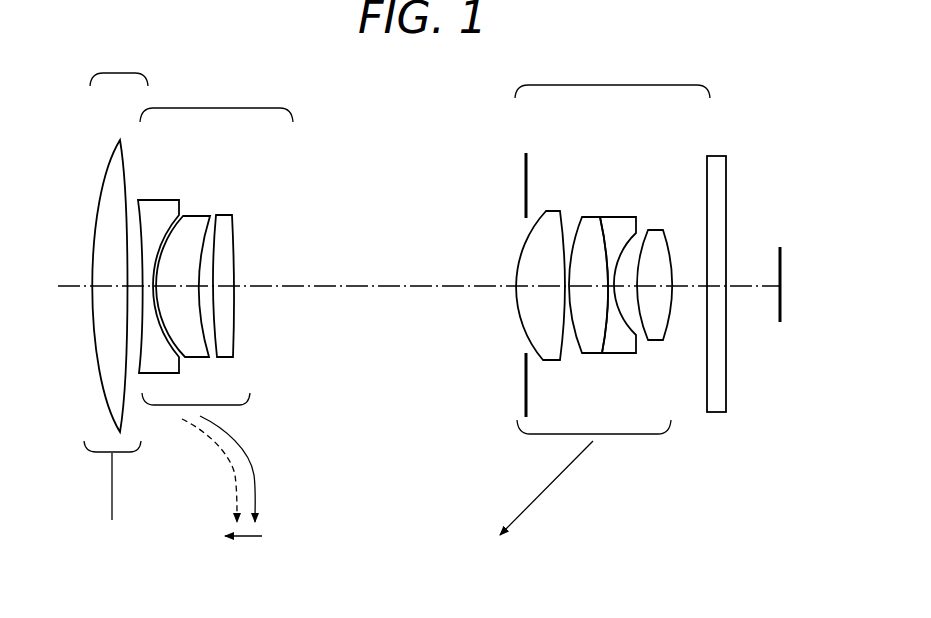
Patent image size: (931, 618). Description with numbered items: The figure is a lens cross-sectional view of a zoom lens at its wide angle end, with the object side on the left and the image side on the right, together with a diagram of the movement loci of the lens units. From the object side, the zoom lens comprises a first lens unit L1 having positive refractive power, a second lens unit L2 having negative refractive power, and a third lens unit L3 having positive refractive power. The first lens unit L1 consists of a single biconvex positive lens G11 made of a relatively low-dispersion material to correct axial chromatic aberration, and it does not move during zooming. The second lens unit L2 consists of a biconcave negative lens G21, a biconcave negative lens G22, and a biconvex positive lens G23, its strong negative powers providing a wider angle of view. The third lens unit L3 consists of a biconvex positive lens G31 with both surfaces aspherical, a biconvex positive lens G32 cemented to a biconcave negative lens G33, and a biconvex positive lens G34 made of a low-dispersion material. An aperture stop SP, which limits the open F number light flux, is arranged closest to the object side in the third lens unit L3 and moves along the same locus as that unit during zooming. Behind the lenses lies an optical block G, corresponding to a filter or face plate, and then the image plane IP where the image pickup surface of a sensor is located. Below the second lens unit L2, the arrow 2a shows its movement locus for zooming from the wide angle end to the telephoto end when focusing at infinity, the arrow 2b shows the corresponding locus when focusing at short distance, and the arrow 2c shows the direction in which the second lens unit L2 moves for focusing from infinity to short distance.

The first lens unit L1 is at (116, 283).
The biconvex positive lens G11 is at (120, 140).
The second lens unit L2 is at (215, 244).
The biconcave negative lens G21 is at (153, 210).
The biconcave negative lens G22 is at (198, 225).
The biconvex positive lens G23 is at (227, 225).
The third lens unit L3 is at (605, 298).
The biconvex positive lens G31 is at (551, 213).
The biconvex positive lens G32 is at (590, 223).
The biconcave negative lens G33 is at (617, 225).
The biconvex positive lens G34 is at (655, 237).
The aperture stop SP is at (522, 167).
The optical block G is at (717, 165).
The image plane IP is at (781, 254).
The arrow 2a is at (250, 462).
The arrow 2b is at (220, 452).
The arrow 2c is at (247, 538).